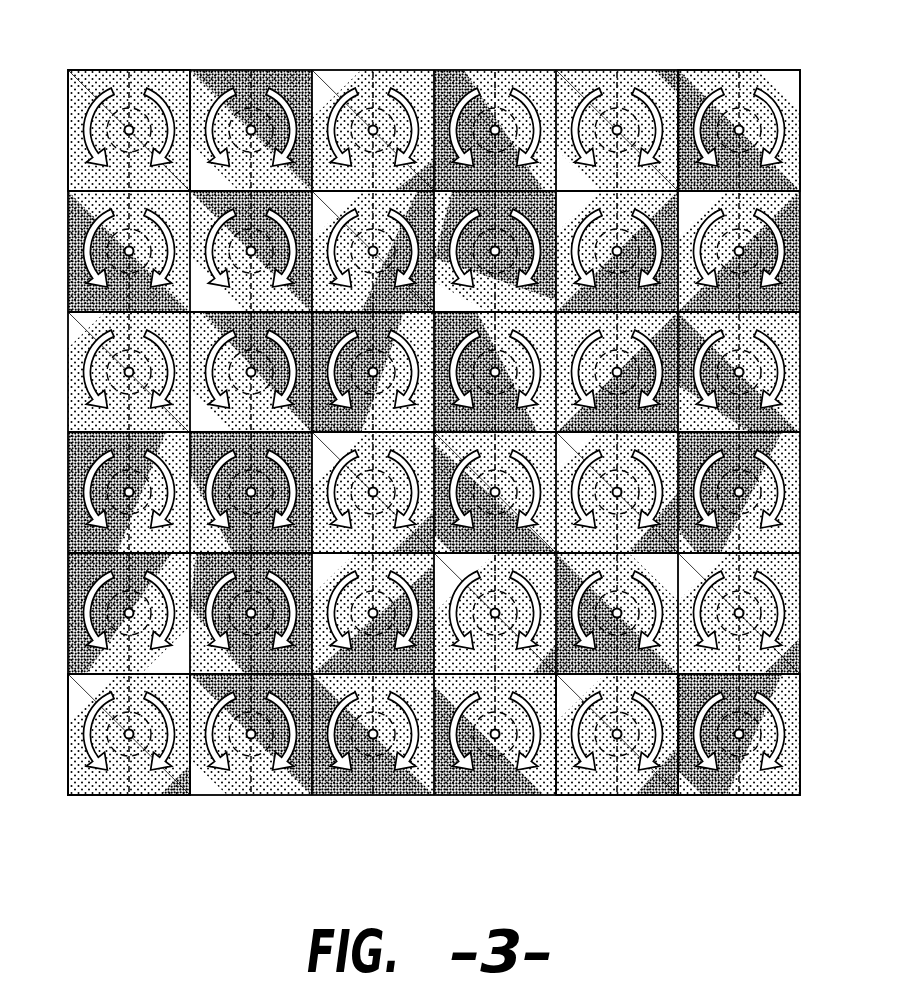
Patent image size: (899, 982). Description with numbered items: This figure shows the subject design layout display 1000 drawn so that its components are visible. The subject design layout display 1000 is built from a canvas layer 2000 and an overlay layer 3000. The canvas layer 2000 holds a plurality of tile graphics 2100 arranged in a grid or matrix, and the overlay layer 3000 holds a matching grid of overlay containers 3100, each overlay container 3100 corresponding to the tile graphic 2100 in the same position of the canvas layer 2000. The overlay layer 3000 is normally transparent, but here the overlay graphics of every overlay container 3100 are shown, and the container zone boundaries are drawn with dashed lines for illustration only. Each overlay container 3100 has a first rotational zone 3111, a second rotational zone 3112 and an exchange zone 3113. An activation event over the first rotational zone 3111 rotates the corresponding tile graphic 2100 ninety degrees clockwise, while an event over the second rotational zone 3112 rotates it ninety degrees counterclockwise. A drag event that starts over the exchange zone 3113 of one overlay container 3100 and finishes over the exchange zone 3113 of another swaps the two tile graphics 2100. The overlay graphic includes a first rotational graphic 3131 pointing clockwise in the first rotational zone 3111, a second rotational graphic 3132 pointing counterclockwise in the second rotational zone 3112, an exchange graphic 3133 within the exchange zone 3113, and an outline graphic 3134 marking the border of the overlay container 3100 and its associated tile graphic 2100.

The subject design layout display 1000 is at (425, 433).
The canvas layer 2000 is at (143, 797).
The tile graphic 2100 is at (177, 797).
The overlay layer 3000 is at (720, 105).
The overlay container 3100 is at (101, 100).
The first rotational zone 3111 is at (770, 90).
The second rotational zone 3112 is at (700, 95).
The exchange zone 3113 is at (735, 115).
The first rotational graphic 3131 is at (175, 100).
The second rotational graphic 3132 is at (82, 118).
The exchange graphic 3133 is at (135, 115).
The outline graphic 3134 is at (218, 96).